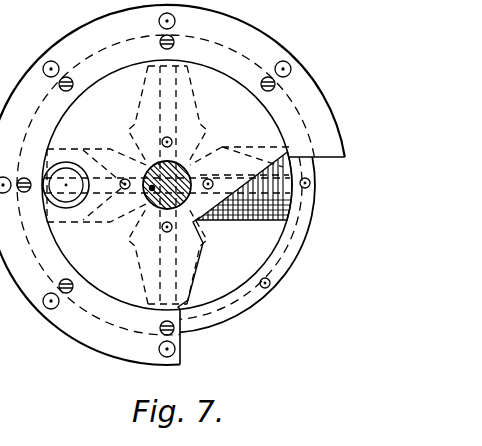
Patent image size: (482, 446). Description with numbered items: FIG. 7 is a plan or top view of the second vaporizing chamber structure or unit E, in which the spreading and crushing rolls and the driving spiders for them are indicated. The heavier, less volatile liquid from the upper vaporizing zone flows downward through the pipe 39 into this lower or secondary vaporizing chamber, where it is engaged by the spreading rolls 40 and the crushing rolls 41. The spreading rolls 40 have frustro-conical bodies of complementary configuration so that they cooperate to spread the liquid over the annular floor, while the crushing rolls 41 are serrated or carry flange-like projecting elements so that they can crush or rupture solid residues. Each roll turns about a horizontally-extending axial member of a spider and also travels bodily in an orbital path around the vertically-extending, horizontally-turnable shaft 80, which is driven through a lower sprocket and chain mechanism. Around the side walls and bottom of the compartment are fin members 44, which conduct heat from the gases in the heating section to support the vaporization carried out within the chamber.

The cover plate E is at (221, 93).
The pipe 39 is at (80, 208).
The spreading rolls 40 is at (133, 114).
The crushing rolls 41 is at (262, 221).
The fin members 44 is at (318, 215).
The shaft 80 is at (193, 162).